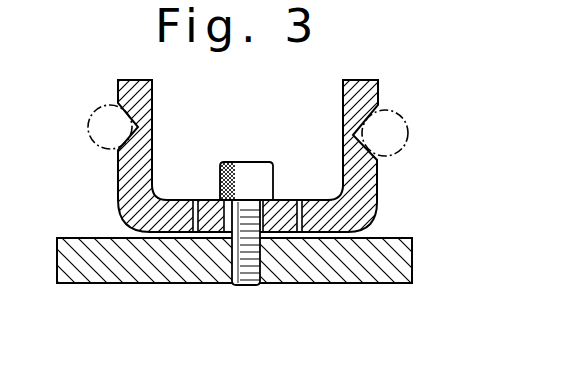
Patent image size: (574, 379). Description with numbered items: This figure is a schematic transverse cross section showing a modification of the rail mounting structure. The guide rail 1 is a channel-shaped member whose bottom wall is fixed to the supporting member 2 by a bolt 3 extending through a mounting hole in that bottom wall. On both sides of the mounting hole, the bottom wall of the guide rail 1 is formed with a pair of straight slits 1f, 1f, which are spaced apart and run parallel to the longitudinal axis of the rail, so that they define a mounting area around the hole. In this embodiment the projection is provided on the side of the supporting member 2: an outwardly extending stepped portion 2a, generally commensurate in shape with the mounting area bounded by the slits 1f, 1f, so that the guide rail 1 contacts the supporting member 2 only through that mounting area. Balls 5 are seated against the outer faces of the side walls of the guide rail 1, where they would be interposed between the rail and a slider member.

The guide rail 1 is at (360, 100).
The straight slit 1f is at (297, 227).
The supporting member 2 is at (390, 238).
The stepped portion 2a is at (205, 238).
The bolt 3 is at (243, 285).
The ball 5 is at (385, 133).